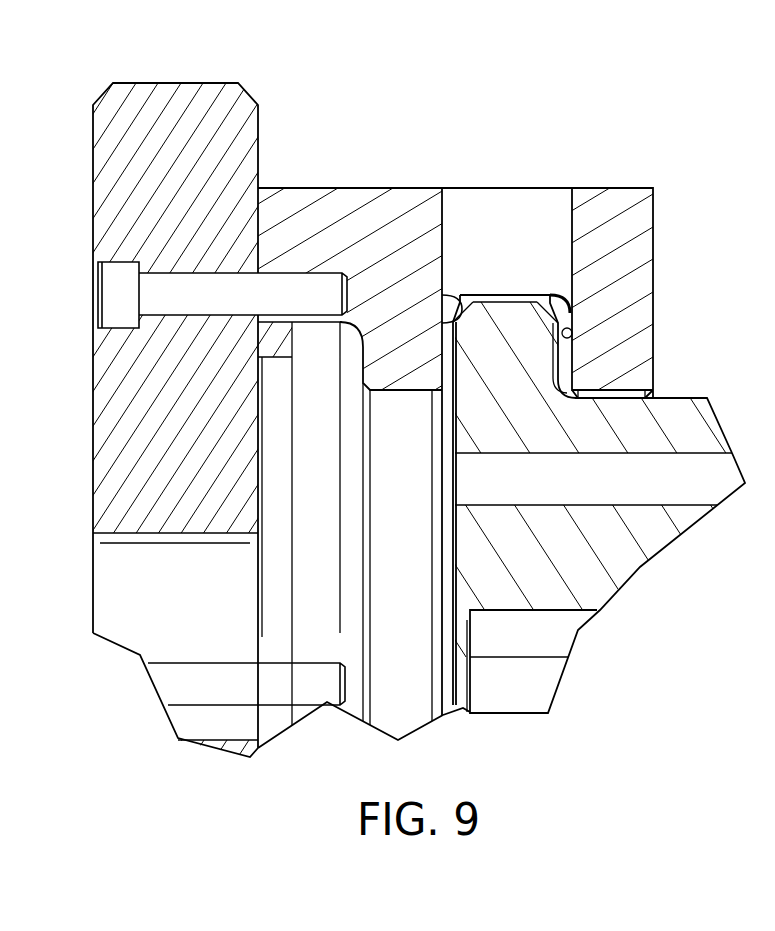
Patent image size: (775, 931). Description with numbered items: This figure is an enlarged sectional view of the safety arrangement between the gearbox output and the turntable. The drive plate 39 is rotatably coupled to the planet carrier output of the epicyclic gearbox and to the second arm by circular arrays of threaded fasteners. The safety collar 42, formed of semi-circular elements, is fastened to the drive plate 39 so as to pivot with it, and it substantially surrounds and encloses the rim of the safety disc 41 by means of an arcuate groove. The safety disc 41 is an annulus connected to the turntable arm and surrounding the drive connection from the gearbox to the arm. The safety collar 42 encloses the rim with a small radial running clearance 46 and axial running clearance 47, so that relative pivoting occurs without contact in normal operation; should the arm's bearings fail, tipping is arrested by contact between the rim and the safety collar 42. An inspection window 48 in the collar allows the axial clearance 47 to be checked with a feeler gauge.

The drive plate 39 is at (188, 88).
The safety collar 42 is at (418, 195).
The inspection window 48 is at (572, 212).
The radial running clearance 46 is at (530, 298).
The axial running clearance 47 is at (457, 296).
The safety disc 41 is at (696, 397).